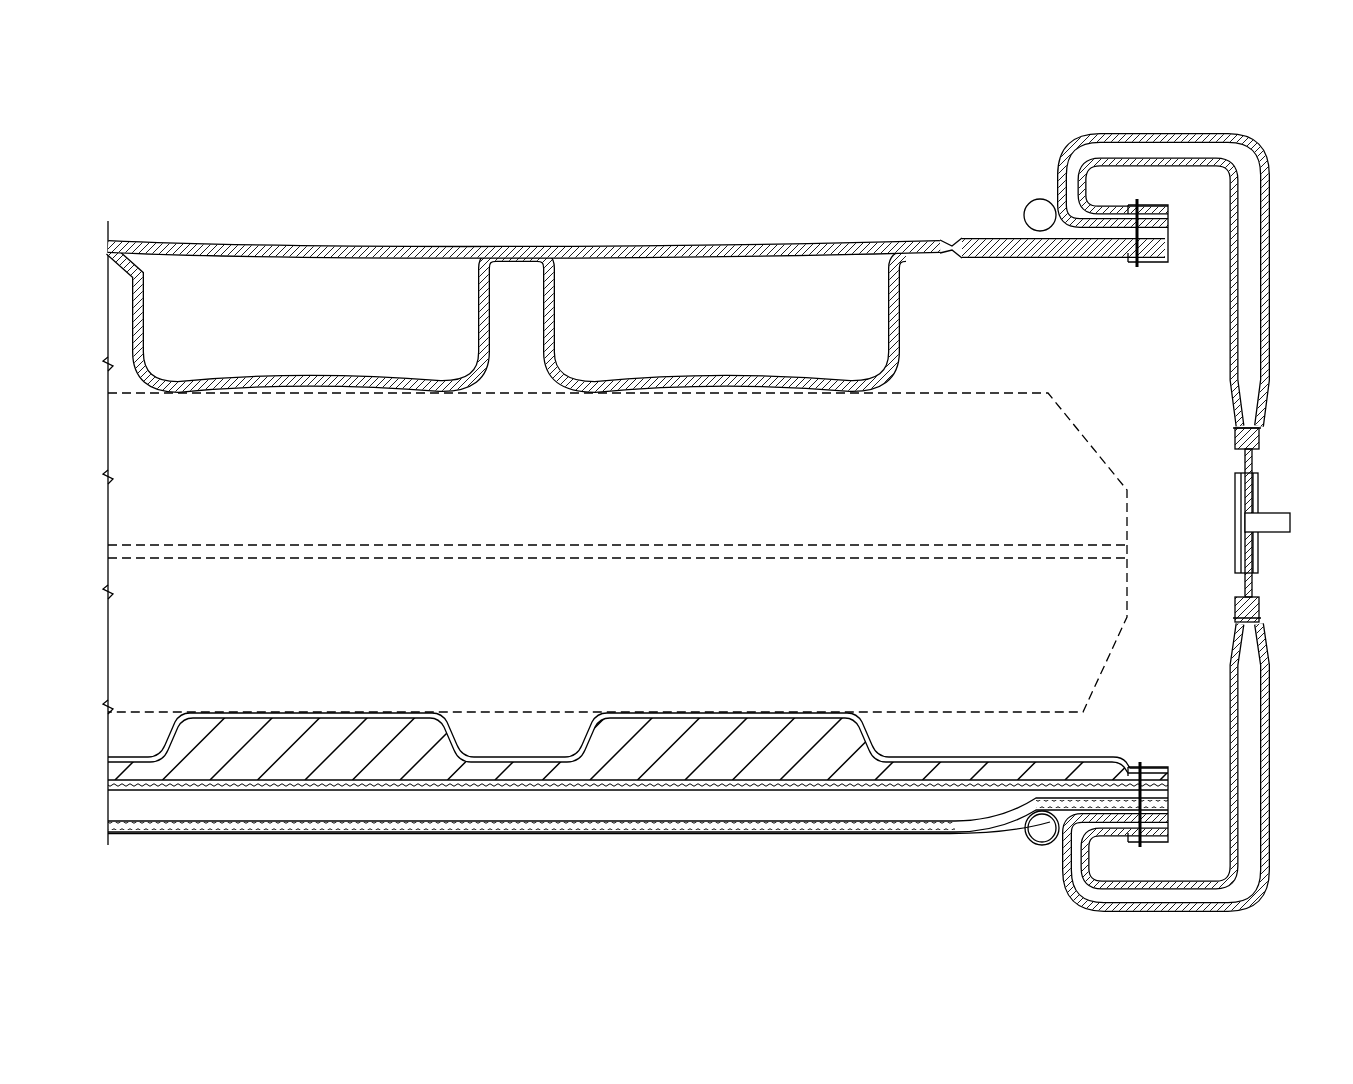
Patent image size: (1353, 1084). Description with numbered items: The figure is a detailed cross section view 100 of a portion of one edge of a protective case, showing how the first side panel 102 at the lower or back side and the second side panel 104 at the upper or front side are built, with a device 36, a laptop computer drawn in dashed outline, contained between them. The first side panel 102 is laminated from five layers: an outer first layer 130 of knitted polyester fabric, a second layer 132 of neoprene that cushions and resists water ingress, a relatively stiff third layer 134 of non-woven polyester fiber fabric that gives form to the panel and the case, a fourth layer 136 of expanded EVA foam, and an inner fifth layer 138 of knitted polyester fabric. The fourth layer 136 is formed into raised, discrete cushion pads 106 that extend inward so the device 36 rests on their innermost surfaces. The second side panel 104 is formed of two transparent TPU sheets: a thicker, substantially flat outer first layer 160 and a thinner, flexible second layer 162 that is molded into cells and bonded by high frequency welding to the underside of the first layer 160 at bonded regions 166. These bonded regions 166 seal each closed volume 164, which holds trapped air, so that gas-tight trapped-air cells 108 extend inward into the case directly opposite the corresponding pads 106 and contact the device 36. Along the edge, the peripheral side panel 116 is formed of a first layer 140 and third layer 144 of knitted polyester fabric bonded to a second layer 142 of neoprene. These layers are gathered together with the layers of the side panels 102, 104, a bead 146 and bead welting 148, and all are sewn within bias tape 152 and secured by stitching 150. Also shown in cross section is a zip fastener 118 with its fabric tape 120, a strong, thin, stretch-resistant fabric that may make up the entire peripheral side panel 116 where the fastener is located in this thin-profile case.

The detailed cross section view 100 is at (386, 165).
The first side panel 102 is at (261, 697).
The second side panel 104 is at (260, 410).
The cushion pads 106 is at (330, 712).
The trapped-air cells 108 is at (327, 395).
The peripheral side panel 116 is at (1274, 167).
The zip fastener 118 is at (1270, 512).
The fabric tape 120 is at (1242, 462).
The first layer 130 is at (787, 835).
The second layer 132 is at (880, 812).
The third layer 134 is at (950, 772).
The fourth layer 136 is at (800, 726).
The fifth layer 138 is at (576, 730).
The first layer 140 is at (1223, 135).
The second layer 142 is at (1260, 262).
The third layer 144 is at (1232, 347).
The bead 146 is at (1040, 199).
The bead welting 148 is at (1028, 205).
The stitching 150 is at (1140, 200).
The bias tape 152 is at (1165, 266).
The first layer 160 is at (630, 260).
The second layer 162 is at (562, 392).
The closed volumes 164 is at (737, 334).
The bonded regions 166 is at (517, 237).
The device 36 is at (951, 392).